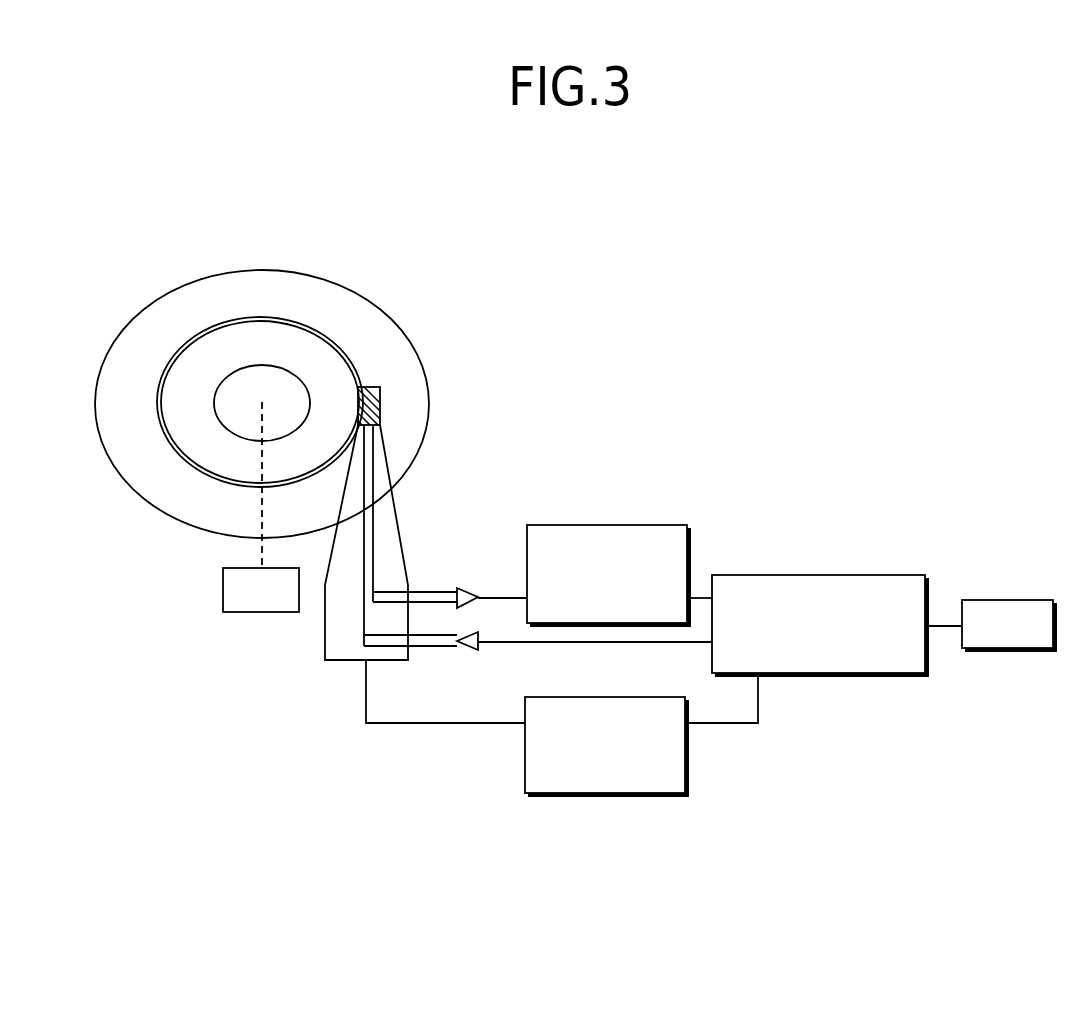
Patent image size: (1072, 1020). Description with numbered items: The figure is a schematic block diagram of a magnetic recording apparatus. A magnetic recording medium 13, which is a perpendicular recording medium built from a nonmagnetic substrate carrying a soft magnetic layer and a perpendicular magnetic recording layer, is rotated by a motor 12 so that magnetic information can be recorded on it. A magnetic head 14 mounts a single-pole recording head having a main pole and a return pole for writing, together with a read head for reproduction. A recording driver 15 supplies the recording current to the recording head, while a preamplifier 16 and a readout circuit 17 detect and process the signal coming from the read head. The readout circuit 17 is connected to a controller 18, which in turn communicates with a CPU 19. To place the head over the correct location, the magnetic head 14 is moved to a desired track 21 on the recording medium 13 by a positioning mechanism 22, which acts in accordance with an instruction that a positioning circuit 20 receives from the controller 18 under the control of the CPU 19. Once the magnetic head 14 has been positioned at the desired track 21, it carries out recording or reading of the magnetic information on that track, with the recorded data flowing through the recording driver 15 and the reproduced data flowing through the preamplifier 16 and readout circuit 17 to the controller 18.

The motor 12 is at (223, 588).
The magnetic recording medium 13 is at (318, 277).
The magnetic head 14 is at (380, 405).
The recording driver 15 is at (467, 650).
The preamplifier 16 is at (472, 587).
The readout circuit 17 is at (598, 525).
The controller 18 is at (837, 575).
The CPU 19 is at (990, 600).
The positioning circuit 20 is at (598, 795).
The track 21 is at (347, 347).
The positioning mechanism 22 is at (325, 633).